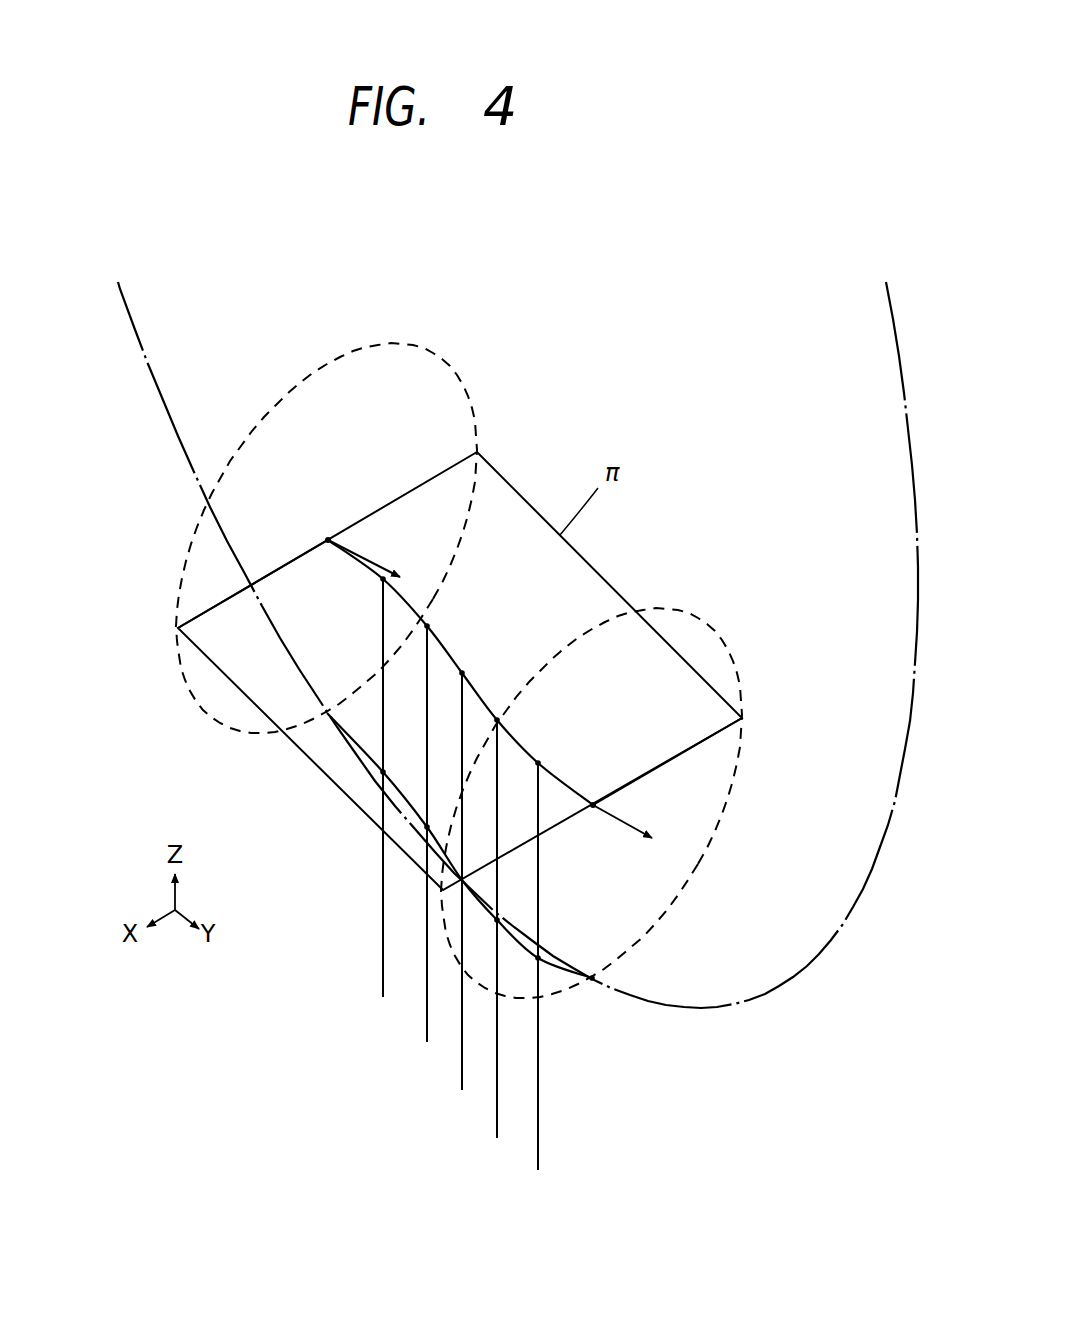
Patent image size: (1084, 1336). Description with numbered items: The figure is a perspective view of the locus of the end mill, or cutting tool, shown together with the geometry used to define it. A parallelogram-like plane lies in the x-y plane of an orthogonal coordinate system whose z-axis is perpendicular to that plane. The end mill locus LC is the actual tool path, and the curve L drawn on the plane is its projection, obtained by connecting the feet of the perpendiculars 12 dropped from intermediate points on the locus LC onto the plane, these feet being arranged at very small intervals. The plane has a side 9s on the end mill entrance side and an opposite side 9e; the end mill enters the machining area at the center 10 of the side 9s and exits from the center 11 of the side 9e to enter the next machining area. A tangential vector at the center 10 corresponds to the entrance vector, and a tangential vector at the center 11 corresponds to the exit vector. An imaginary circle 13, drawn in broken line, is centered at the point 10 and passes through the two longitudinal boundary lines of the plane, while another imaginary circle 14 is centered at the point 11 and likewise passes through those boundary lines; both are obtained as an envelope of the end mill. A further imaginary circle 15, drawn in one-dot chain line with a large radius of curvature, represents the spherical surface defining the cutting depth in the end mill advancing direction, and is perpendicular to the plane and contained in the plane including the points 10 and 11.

The side on the end mill entrance side 9s is at (290, 562).
The side opposite to the entrance side 9e is at (663, 765).
The center of the entrance side 10 is at (328, 540).
The center of the exit side 11 is at (593, 805).
The perpendiculars 12 is at (383, 973).
The imaginary circle 13 is at (407, 343).
The imaginary circle 14 is at (680, 612).
The imaginary circle 15 is at (722, 1007).
The curve L is at (452, 658).
The end mill locus LC is at (557, 968).